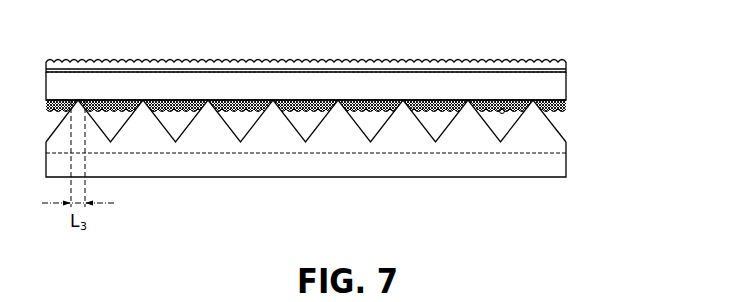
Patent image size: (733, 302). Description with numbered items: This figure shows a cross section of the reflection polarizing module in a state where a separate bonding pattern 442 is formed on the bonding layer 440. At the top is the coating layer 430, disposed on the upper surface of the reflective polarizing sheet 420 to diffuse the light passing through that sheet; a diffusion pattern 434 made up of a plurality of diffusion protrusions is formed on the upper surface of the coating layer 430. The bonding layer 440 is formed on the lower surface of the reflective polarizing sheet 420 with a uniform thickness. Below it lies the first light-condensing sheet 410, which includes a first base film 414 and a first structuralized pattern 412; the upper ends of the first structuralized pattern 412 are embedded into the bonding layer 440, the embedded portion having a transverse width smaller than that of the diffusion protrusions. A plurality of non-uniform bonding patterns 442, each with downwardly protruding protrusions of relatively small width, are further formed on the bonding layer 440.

The first light-condensing sheet 410 is at (347, 162).
The first structuralized pattern 412 is at (548, 143).
The first base film 414 is at (552, 162).
The reflective polarizing sheet 420 is at (557, 82).
The coating layer 430 is at (338, 41).
The diffusion pattern 434 is at (438, 58).
The bonding layer 440 is at (338, 67).
The bonding pattern 442 is at (510, 109).